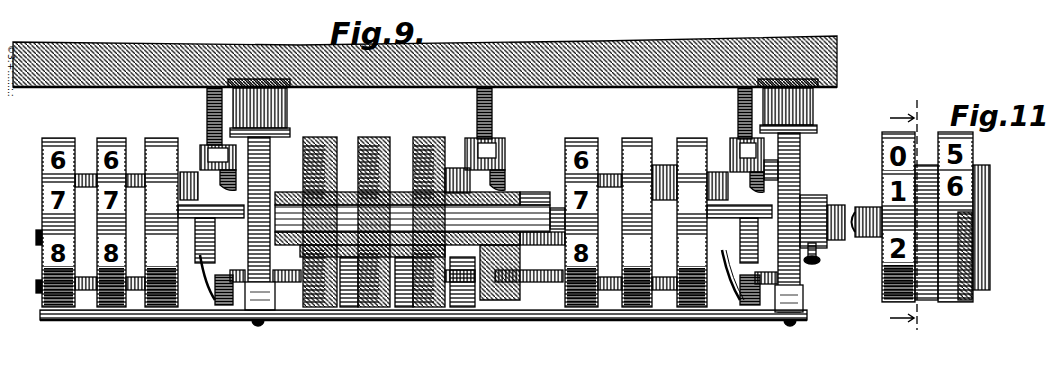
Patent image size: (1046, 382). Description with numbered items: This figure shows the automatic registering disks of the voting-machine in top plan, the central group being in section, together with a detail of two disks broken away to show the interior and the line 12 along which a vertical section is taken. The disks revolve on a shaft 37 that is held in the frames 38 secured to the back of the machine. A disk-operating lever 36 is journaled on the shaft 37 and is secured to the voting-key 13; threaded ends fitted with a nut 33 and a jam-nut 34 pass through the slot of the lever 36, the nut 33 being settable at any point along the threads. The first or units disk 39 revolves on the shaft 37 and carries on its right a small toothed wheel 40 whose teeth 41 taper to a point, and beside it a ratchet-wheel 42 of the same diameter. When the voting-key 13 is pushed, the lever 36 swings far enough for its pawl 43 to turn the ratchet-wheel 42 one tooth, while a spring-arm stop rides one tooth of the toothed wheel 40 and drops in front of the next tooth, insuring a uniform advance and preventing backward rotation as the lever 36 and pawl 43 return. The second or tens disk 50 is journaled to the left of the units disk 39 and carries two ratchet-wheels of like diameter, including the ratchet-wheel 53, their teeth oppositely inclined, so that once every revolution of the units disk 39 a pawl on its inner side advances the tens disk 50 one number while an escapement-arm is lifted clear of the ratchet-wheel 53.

In FIG. 11, the section line 12- 12 is at (907, 220).
In FIG. 9, the voting-key 13 is at (207, 108).
In FIG. 9, the nut 33 is at (208, 148).
In FIG. 9, the jam-nut 34 is at (267, 158).
In FIG. 9, the disk-operating lever 36 is at (747, 305).
In FIG. 9, the shaft 37 is at (862, 235).
In FIG. 9, the frames 38 is at (270, 180).
In FIG. 9, the units disk 39 is at (165, 137).
In FIG. 9, the toothed wheel 40 is at (189, 172).
In FIG. 9, the teeth 41 is at (708, 150).
In FIG. 9, the ratchet-wheel 42 is at (772, 168).
In FIG. 9, the pawl 43 is at (722, 305).
In FIG. 9, the tens disk 50 is at (636, 137).
In FIG. 9, the ratchet-wheel 53 is at (661, 165).